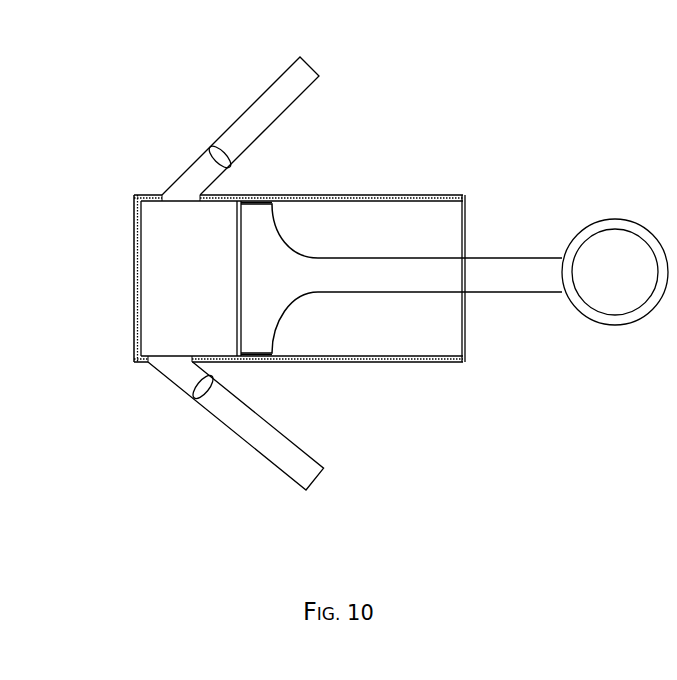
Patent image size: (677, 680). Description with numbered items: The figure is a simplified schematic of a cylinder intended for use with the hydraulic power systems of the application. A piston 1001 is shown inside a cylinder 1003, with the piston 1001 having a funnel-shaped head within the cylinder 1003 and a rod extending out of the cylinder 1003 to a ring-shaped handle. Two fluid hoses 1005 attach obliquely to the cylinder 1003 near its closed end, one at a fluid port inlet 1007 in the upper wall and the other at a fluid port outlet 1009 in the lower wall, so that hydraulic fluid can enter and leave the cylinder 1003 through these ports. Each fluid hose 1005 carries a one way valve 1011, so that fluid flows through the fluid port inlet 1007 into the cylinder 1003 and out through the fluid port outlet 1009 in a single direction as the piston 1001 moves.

The piston 1001 is at (283, 228).
The cylinder 1003 is at (400, 362).
The fluid hose 1005 is at (282, 77).
The fluid port inlet 1007 is at (167, 198).
The fluid port outlet 1009 is at (163, 355).
The one way valves 1011 is at (210, 150).